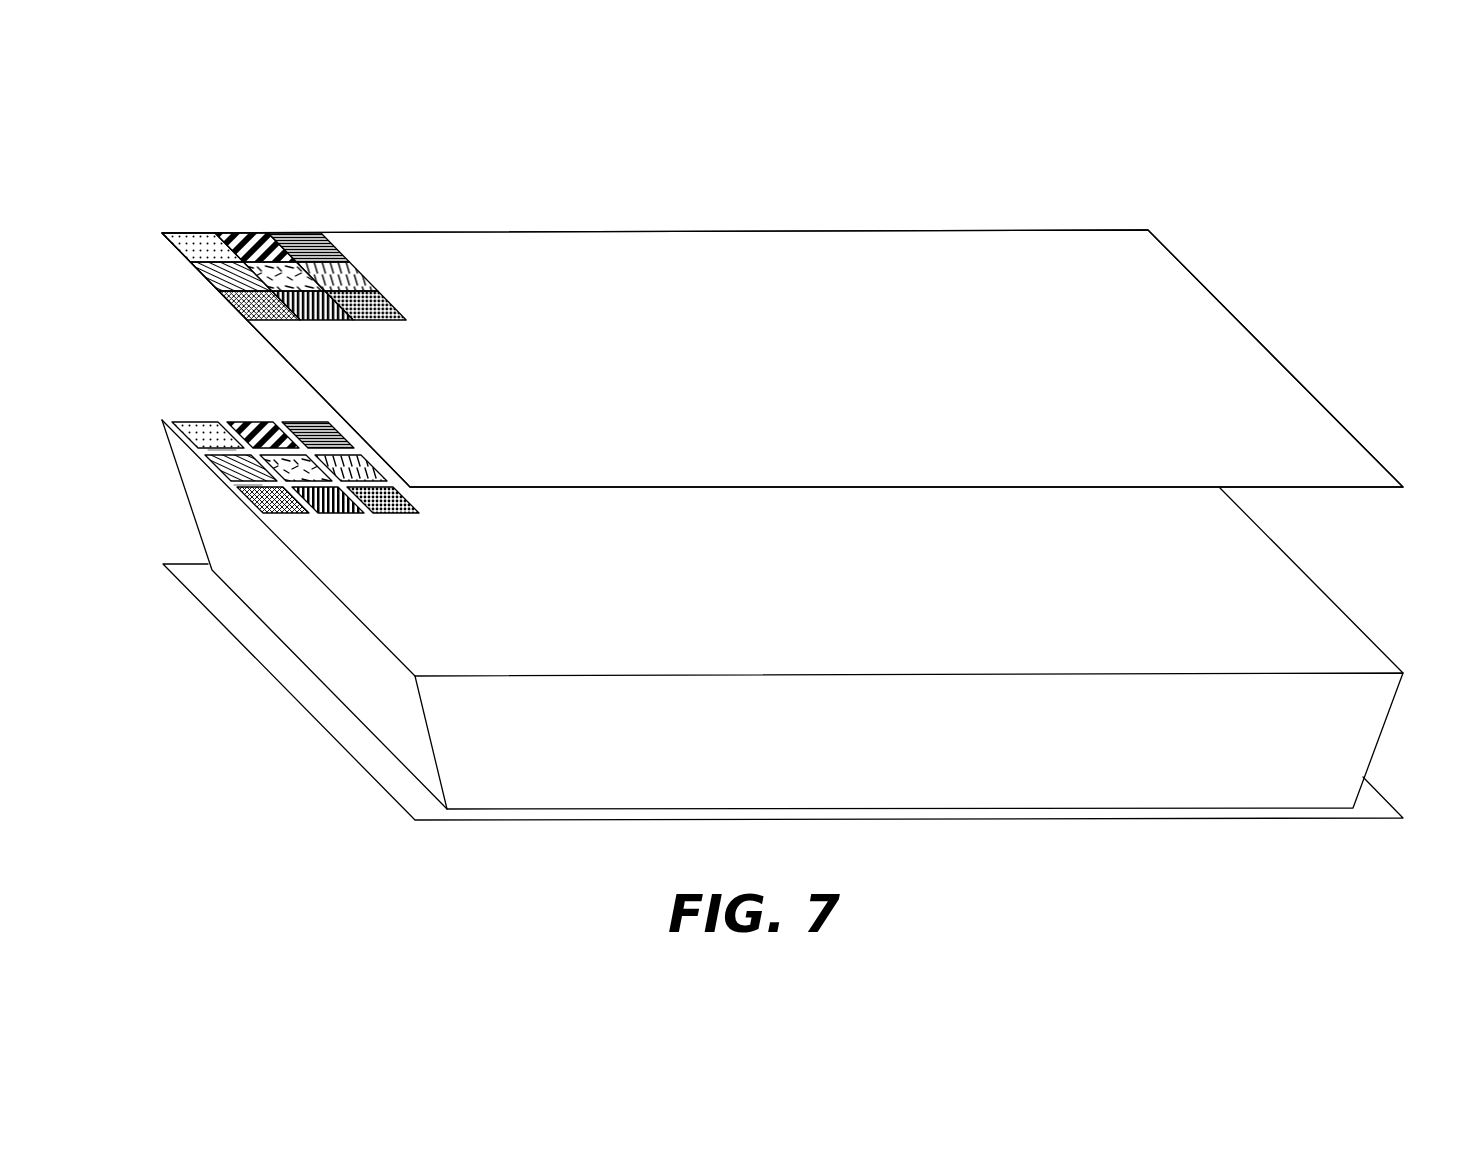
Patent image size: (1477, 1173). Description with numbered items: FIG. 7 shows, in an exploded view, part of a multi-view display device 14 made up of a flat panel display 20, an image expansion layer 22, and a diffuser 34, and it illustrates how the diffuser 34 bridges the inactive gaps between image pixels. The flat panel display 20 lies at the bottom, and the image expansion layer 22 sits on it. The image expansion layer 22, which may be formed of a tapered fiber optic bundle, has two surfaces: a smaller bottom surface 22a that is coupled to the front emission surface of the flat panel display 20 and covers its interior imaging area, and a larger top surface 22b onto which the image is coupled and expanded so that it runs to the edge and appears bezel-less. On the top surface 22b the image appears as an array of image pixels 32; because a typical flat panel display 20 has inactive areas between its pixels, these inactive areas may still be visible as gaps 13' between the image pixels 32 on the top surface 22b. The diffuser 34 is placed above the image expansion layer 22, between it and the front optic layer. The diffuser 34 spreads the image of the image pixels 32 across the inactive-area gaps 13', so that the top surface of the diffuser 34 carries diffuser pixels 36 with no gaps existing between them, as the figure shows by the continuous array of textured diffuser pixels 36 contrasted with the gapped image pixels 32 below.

The multi-view display device 14 is at (206, 166).
The diffuser pixels 36 is at (307, 247).
The diffuser 34 is at (1355, 440).
The image pixels 32 is at (307, 432).
The gaps 13' is at (187, 484).
The image expansion layer 22 is at (1378, 742).
The bottom surface 22a is at (327, 640).
The top surface 22b is at (333, 550).
The flat panel display 20 is at (1380, 806).